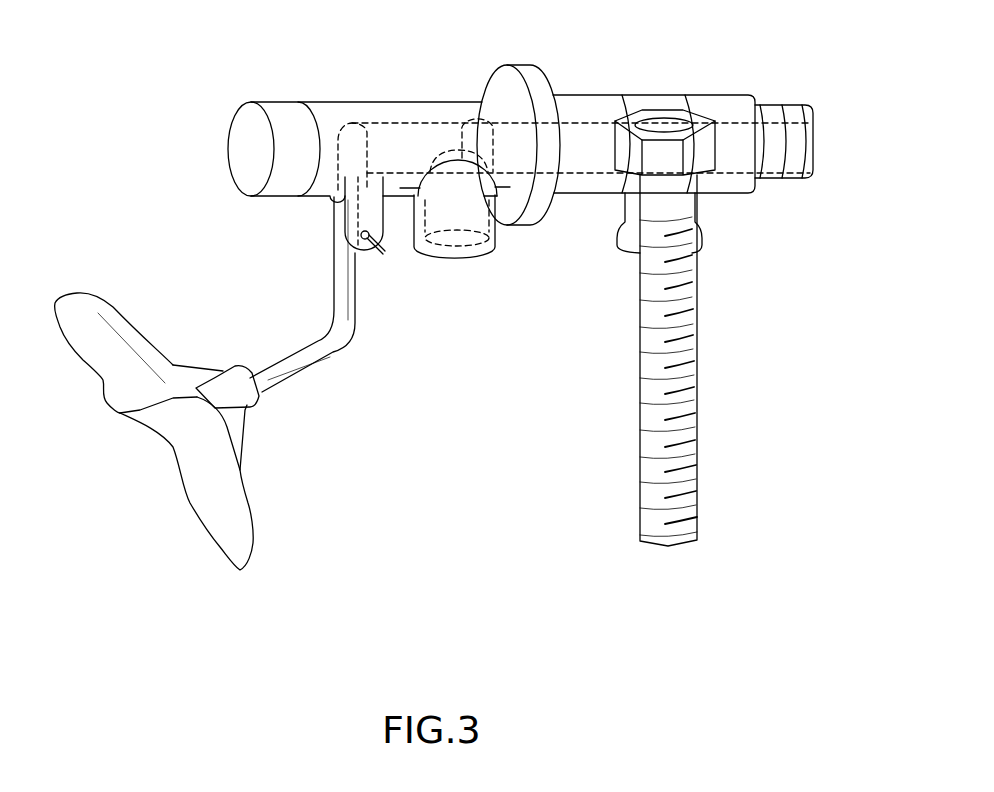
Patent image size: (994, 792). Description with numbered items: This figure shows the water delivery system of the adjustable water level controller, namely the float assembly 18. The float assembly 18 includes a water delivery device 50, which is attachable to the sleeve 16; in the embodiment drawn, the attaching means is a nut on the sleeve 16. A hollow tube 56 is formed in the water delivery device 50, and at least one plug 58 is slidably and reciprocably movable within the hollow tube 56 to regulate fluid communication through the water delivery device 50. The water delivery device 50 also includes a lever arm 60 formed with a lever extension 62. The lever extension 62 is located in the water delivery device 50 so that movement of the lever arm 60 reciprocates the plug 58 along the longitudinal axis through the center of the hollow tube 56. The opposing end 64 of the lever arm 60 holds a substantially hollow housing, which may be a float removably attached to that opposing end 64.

The float assembly 18 is at (212, 141).
The hollow tube 56 is at (375, 108).
The plug 58 is at (408, 143).
The water delivery device 50 is at (592, 103).
The sleeve 16 is at (700, 160).
The lever extension 62 is at (345, 150).
The lever arm 60 is at (353, 330).
The opposing end 64 is at (258, 397).